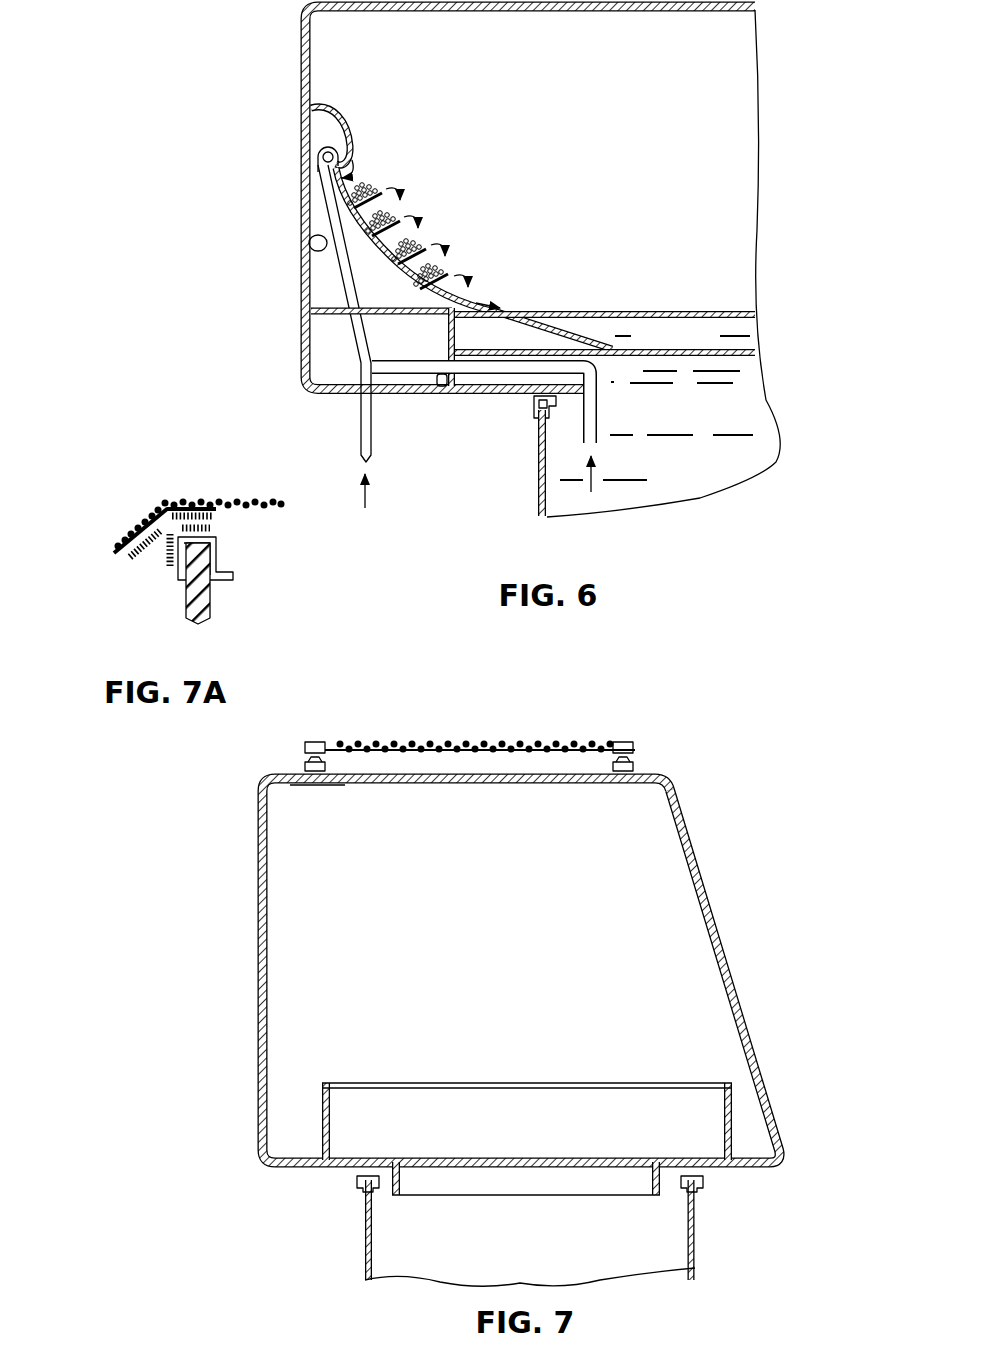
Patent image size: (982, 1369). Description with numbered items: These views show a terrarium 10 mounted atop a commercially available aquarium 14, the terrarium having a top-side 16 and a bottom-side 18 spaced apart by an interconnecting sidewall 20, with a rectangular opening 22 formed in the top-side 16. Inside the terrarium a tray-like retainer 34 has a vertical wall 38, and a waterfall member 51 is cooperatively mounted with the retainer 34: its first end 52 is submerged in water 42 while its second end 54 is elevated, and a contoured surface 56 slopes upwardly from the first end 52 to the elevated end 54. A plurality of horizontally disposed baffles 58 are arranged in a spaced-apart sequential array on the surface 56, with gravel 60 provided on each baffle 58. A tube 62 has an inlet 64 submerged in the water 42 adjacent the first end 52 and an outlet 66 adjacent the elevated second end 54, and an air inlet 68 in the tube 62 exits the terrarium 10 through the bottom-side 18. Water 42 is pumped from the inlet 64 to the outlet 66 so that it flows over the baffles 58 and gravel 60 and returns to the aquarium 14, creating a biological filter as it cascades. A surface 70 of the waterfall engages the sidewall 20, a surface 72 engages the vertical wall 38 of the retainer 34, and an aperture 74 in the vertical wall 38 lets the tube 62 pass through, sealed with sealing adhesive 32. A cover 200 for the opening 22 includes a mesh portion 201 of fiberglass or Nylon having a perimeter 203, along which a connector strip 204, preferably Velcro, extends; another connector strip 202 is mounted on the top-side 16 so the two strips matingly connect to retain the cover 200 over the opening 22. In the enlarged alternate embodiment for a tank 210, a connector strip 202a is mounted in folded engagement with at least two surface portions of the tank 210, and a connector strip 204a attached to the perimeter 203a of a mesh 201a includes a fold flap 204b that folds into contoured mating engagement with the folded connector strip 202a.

In FIG. 6, the terrarium 10 is at (472, 225).
In FIG. 7, the terrarium 10 is at (451, 943).
In FIG. 6, the aquarium 14 is at (529, 477).
In FIG. 7, the top-side 16 is at (660, 773).
In FIG. 6, the bottom-side 18 is at (346, 392).
In FIG. 6, the sidewall 20 is at (292, 147).
In FIG. 7, the sidewall 20 is at (254, 986).
In FIG. 7, the rectangular opening 22 is at (316, 780).
In FIG. 6, the sealing adhesive 32 is at (432, 360).
In FIG. 6, the retainer 34 is at (446, 329).
In FIG. 6, the vertical wall 38 is at (448, 338).
In FIG. 6, the water 42 is at (663, 263).
In FIG. 6, the waterfall member 51 is at (479, 246).
In FIG. 6, the first end 52 is at (613, 338).
In FIG. 6, the second end 54 is at (332, 110).
In FIG. 6, the contoured surface 56 is at (478, 300).
In FIG. 6, the baffles 58 is at (392, 178).
In FIG. 6, the gravel 60 is at (365, 172).
In FIG. 6, the tube 62 is at (340, 296).
In FIG. 6, the inlet 64 is at (574, 500).
In FIG. 6, the outlet 66 is at (342, 167).
In FIG. 6, the air inlet 68 is at (370, 463).
In FIG. 6, the surface 70 is at (309, 243).
In FIG. 6, the surface 72 is at (460, 322).
In FIG. 6, the aperture 74 is at (447, 382).
In FIG. 7, the cover 200 is at (408, 712).
In FIG. 7, the mesh portion 201 is at (481, 742).
In FIG. 7, the connector strip 202 is at (336, 746).
In FIG. 7, the perimeter 203 is at (318, 742).
In FIG. 7, the connector strip 204 is at (303, 764).
In FIG. 7A, the mesh 201a is at (268, 507).
In FIG. 7A, the connector strip 202a is at (166, 565).
In FIG. 7A, the perimeter 203a is at (152, 506).
In FIG. 7A, the connector strip 204a is at (216, 521).
In FIG. 7A, the fold flap 204b is at (150, 556).
In FIG. 7A, the tank 210 is at (185, 600).